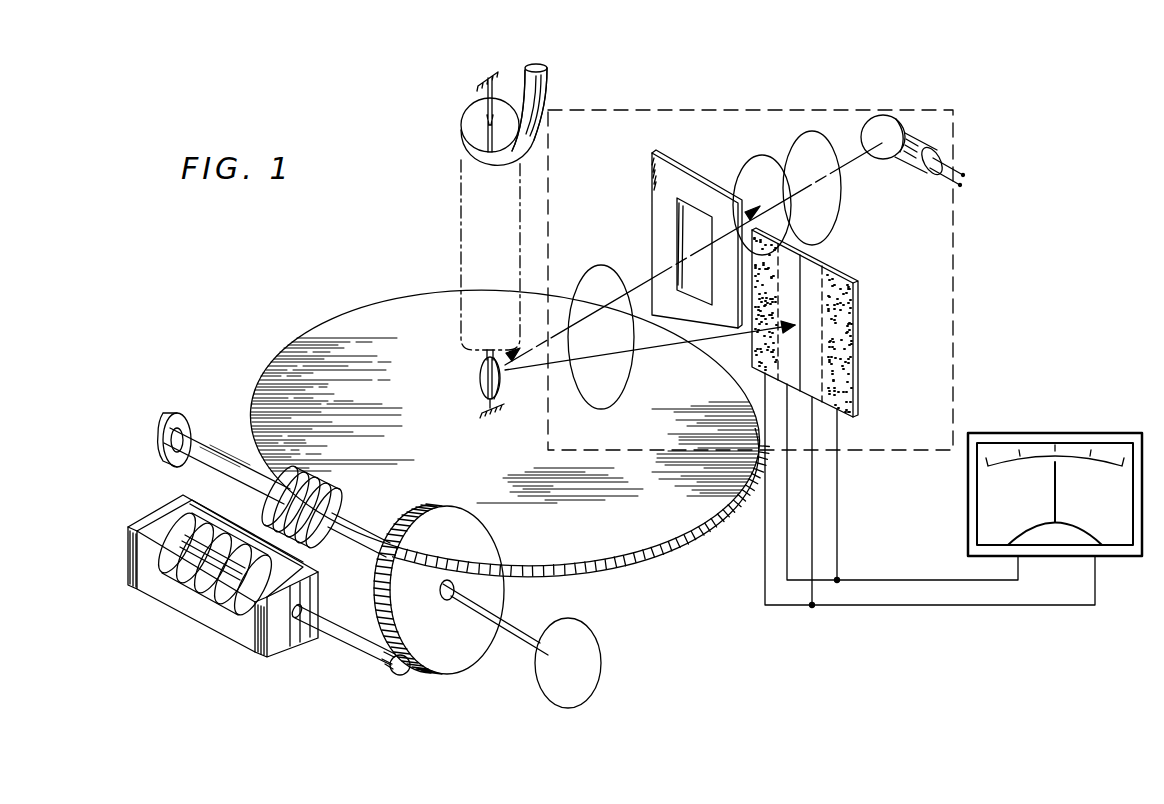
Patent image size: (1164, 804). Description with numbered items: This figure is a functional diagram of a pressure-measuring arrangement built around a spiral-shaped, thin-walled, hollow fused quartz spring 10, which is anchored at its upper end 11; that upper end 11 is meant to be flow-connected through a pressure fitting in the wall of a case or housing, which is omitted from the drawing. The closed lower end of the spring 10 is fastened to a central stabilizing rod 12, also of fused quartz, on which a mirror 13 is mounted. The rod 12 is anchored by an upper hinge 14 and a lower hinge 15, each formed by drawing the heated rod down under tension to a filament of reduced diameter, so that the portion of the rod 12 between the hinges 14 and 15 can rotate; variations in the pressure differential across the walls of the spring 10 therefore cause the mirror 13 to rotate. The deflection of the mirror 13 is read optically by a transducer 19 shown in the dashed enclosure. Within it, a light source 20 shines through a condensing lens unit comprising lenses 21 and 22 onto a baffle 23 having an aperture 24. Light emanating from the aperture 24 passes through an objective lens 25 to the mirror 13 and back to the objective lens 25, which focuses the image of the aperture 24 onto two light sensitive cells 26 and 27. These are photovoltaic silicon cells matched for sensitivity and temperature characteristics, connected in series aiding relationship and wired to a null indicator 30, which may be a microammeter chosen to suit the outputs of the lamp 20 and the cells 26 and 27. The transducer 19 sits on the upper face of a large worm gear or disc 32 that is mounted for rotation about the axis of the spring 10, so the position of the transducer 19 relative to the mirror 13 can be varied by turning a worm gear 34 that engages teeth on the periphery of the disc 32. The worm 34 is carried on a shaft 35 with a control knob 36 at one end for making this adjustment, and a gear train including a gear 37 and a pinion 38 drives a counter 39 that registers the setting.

The spring 10 is at (461, 136).
The upper end 11 is at (548, 84).
The central stabilizing rod 12 is at (486, 356).
The mirror 13 is at (482, 380).
The upper hinge 14 is at (489, 122).
The lower hinge 15 is at (490, 405).
The transducer 19 is at (730, 112).
The light source 20 is at (881, 148).
The lens 21 is at (800, 140).
The lens 22 is at (752, 162).
The baffle 23 is at (690, 165).
The aperture 24 is at (676, 206).
The objective lens 25 is at (598, 270).
The light sensitive cell 26 is at (779, 283).
The light sensitive cell 27 is at (848, 328).
The null indicator 30 is at (968, 498).
The disc 32 is at (404, 303).
The worm gear 34 is at (322, 507).
The shaft 35 is at (240, 454).
The control knob 36 is at (160, 440).
The gear 37 is at (454, 551).
The pinion 38 is at (406, 675).
The counter 39 is at (210, 588).